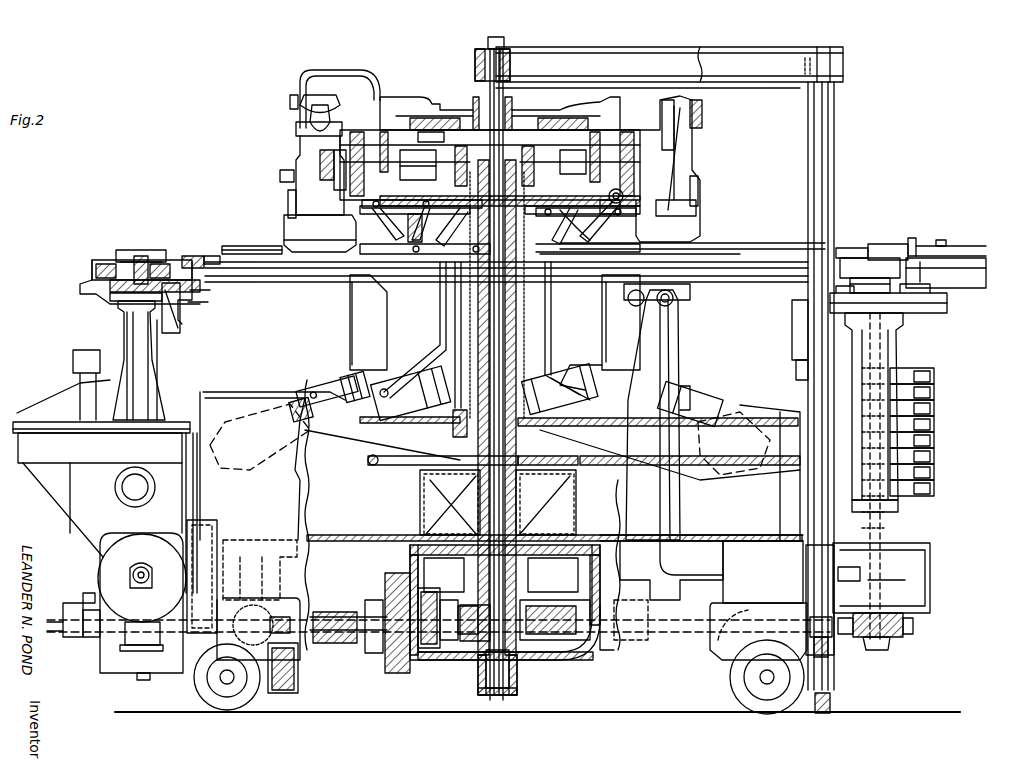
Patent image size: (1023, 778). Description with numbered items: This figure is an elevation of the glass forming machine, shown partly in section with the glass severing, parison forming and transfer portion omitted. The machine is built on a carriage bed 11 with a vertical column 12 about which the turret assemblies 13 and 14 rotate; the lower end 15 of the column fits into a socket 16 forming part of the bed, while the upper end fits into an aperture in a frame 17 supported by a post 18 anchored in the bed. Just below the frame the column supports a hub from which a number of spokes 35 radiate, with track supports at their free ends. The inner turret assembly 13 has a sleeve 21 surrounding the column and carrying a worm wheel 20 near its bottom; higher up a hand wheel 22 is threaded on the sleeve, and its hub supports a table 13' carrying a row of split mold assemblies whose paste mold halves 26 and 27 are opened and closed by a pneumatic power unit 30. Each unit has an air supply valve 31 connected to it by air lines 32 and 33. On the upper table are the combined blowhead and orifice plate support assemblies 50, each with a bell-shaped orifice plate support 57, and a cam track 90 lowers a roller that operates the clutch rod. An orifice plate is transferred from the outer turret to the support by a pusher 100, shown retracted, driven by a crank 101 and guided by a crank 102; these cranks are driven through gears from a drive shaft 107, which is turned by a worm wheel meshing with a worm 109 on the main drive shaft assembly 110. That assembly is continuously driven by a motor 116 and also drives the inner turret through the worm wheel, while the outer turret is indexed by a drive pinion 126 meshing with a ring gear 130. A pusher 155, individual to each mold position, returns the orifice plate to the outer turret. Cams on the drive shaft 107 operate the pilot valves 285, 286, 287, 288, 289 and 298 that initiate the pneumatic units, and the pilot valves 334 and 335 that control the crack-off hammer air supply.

The carriage bed 11 is at (765, 532).
The vertical column 12 is at (440, 508).
The turret assembly 13 is at (460, 368).
The table 13' is at (374, 407).
The turret assembly 14 is at (210, 268).
The lower end of column 15 is at (486, 672).
The socket 16 is at (520, 678).
The frame 17 is at (543, 60).
The post 18 is at (810, 326).
The worm wheel 20 is at (574, 592).
The sleeve 21 is at (458, 322).
The hand wheel 22 is at (396, 466).
The paste mold half 26 is at (276, 412).
The paste mold half 27 is at (358, 298).
The pneumatic power unit 30 is at (418, 376).
The air supply valve 31 is at (412, 226).
The air line 32 is at (548, 310).
The air line 33 is at (540, 332).
The spokes 35 is at (446, 112).
The combined blowhead and orifice plate support assembly 50 is at (300, 164).
The orifice plate support 57 is at (300, 238).
The cam track 90 is at (404, 90).
The pusher 100 is at (844, 250).
The crank 101 is at (946, 272).
The crank 102 is at (850, 266).
The drive shaft 107 is at (884, 350).
The worm 109 is at (896, 640).
The main drive shaft assembly 110 is at (702, 660).
The motor 116 is at (110, 570).
The drive pinion 126 is at (104, 258).
The ring gear 130 is at (188, 252).
The pusher 155 is at (594, 254).
The pilot valve 285 is at (934, 485).
The pilot valve 286 is at (934, 469).
The pilot valve 287 is at (934, 453).
The pilot valve 288 is at (934, 437).
The pilot valve 289 is at (934, 421).
The pilot valve 298 is at (934, 405).
The pilot valve 334 is at (934, 373).
The pilot valve 335 is at (934, 389).